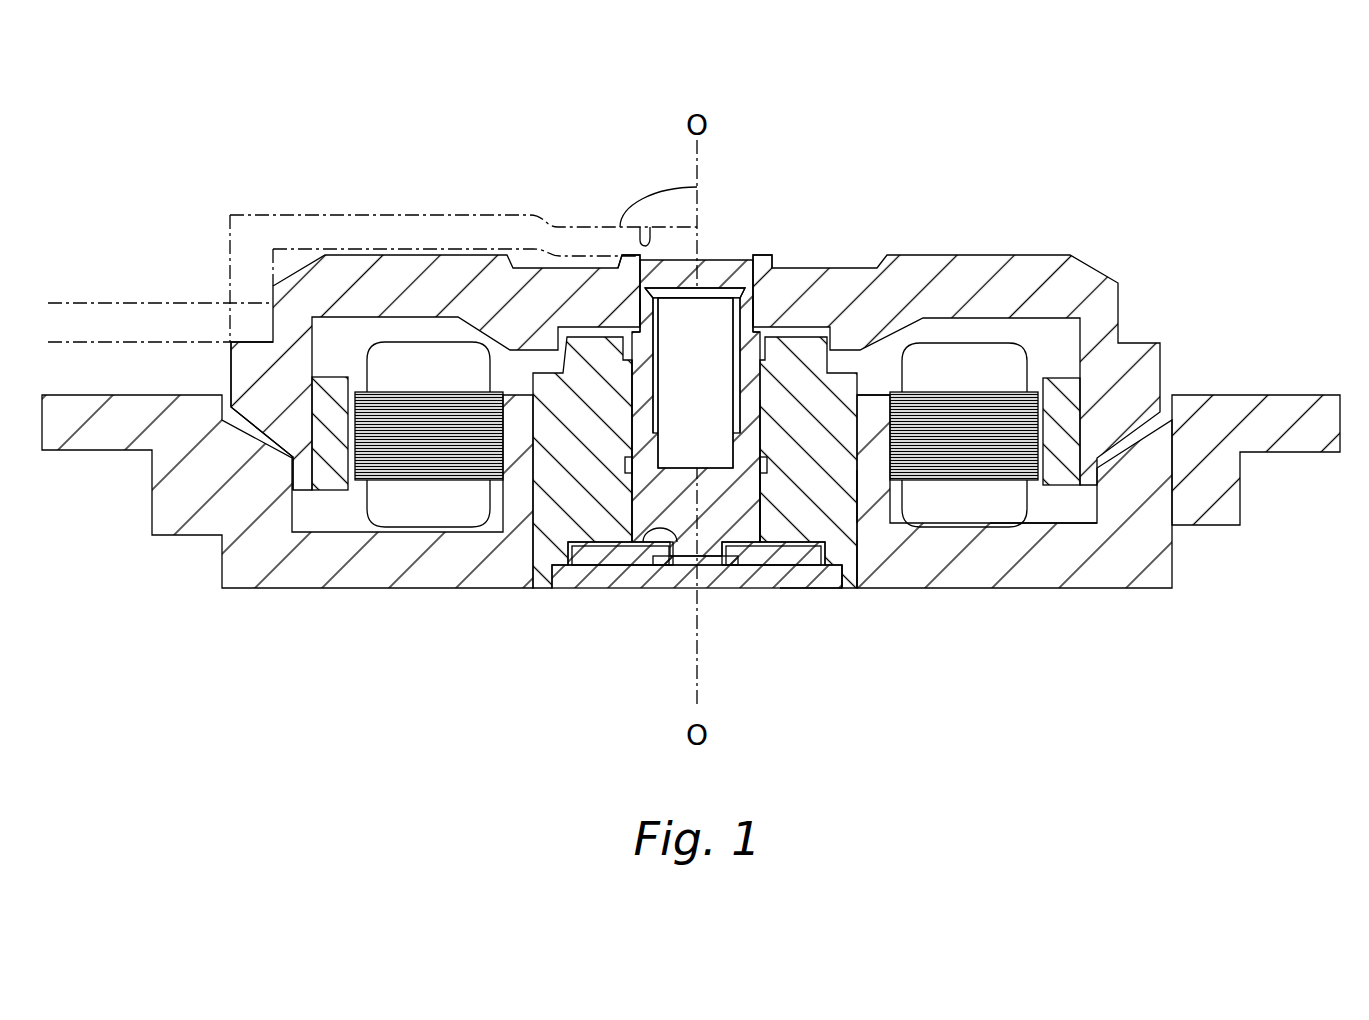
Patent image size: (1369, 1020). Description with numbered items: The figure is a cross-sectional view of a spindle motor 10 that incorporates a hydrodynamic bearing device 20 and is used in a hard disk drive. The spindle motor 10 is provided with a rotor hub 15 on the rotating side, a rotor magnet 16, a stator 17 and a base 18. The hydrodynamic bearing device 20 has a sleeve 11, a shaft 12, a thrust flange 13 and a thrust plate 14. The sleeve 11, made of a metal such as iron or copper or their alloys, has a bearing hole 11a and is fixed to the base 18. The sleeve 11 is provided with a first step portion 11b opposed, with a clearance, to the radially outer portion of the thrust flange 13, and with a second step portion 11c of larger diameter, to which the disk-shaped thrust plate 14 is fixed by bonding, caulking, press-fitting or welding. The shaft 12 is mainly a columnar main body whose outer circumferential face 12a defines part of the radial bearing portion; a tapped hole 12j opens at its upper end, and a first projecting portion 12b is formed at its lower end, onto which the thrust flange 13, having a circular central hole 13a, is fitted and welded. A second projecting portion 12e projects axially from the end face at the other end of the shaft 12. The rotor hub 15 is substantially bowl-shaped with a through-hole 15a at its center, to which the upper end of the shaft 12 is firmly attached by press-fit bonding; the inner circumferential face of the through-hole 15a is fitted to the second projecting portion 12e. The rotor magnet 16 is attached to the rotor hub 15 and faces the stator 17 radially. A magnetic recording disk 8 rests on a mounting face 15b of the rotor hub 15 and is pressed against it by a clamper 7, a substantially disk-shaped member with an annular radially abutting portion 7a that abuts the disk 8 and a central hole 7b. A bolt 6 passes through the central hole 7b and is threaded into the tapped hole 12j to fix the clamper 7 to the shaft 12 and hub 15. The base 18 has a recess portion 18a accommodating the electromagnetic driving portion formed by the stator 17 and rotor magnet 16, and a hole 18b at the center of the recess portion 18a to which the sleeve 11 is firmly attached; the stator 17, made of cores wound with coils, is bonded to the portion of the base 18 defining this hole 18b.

The bolt 6 is at (683, 187).
The clamper 7 is at (363, 215).
The annular radially abutting portion 7a is at (255, 258).
The central hole 7b is at (640, 222).
The magnetic recording disk 8 is at (130, 302).
The spindle motor 10 is at (847, 97).
The sleeve 11 is at (555, 492).
The bearing hole 11a is at (757, 498).
The first step portion 11b is at (795, 580).
The second step portion 11c is at (830, 587).
The shaft 12 is at (762, 378).
The outer circumferential face 12a is at (772, 437).
The first projecting portion 12b is at (685, 550).
The second projecting portion 12e is at (642, 318).
The tapped hole 12j is at (678, 292).
The thrust flange 13 is at (593, 552).
The circular central hole 13a is at (630, 553).
The thrust plate 14 is at (780, 577).
The rotor hub 15 is at (965, 270).
The through-hole 15a is at (750, 305).
The mounting face 15b is at (255, 342).
The rotor magnet 16 is at (1067, 408).
The stator 17 is at (978, 360).
The base 18 is at (1108, 567).
The recess portion 18a is at (1057, 513).
The hole 18b is at (850, 485).
The hydrodynamic bearing device 20 is at (618, 400).